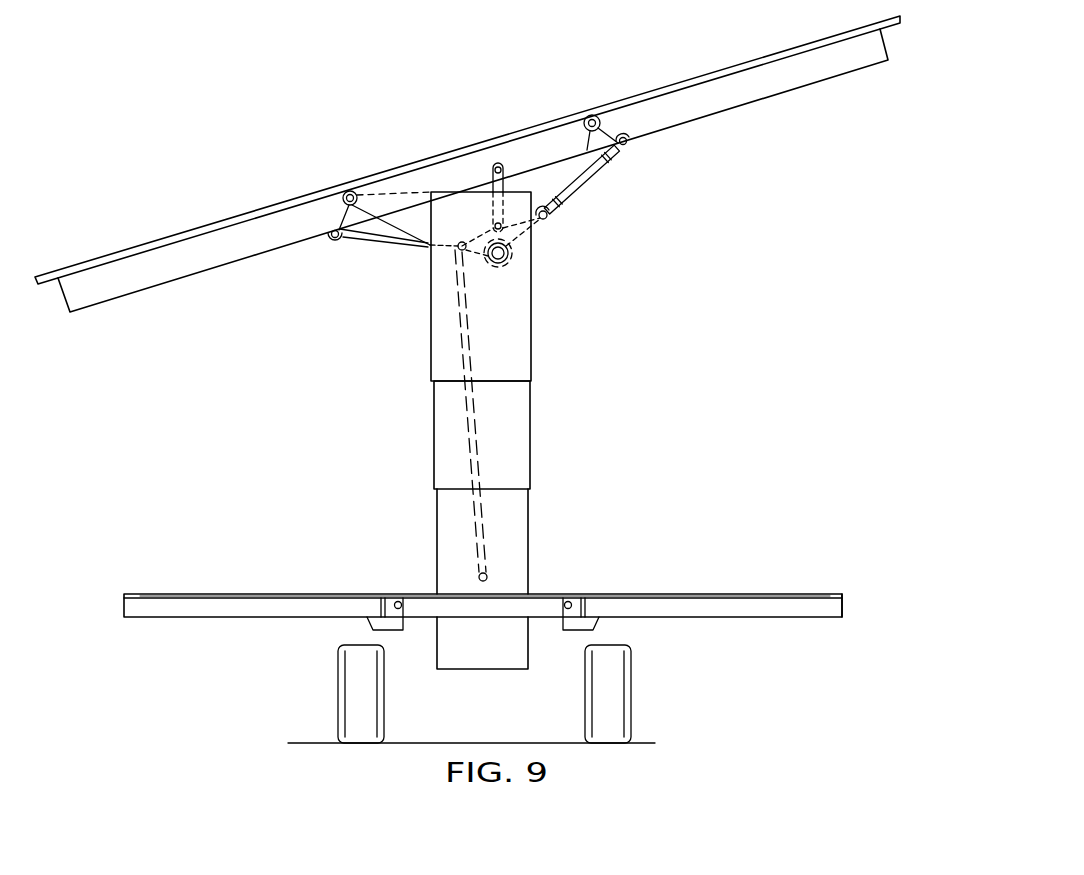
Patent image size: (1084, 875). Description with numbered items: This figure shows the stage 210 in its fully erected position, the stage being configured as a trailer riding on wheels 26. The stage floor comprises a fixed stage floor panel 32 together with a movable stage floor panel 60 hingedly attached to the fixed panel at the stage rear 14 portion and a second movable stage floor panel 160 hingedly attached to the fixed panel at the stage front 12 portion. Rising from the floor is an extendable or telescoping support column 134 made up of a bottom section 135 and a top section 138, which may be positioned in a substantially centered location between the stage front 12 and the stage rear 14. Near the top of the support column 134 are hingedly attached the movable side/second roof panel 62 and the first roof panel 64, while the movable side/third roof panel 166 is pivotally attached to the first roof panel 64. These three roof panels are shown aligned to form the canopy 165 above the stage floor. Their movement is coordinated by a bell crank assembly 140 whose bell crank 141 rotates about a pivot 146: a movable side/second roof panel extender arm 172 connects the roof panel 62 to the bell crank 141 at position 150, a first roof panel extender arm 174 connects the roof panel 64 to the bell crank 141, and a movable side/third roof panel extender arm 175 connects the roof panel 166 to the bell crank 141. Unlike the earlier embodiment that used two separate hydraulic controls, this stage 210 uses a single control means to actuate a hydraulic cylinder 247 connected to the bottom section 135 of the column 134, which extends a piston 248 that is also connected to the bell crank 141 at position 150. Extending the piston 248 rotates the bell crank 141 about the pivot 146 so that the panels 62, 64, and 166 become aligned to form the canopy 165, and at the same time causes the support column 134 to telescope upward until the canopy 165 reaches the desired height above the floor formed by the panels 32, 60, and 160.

The stage front 12 is at (843, 603).
The stage rear 14 is at (125, 610).
The wheels 26 is at (363, 703).
The fixed stage floor panel 32 is at (417, 593).
The movable stage floor panel 60 is at (187, 594).
The movable side/second roof panel 62 is at (190, 236).
The first roof panel 64 is at (488, 146).
The support columns 134 is at (552, 438).
The bottom section 135 is at (523, 537).
The top section 138 is at (533, 348).
The bell crank assembly 140 is at (574, 258).
The bell crank 141 is at (537, 232).
The pivot 146 is at (505, 260).
The position 150 is at (462, 256).
The second movable stage floor panel 160 is at (822, 593).
The canopy 165 is at (322, 141).
The movable side/third roof panel 166 is at (786, 50).
The movable side/second roof panel extender arm 172 is at (392, 245).
The first roof panel extender arm 174 is at (503, 192).
The movable side/third roof panel extender arm 175 is at (584, 178).
The stage 210 is at (245, 172).
The hydraulic cylinder 247 is at (478, 528).
The piston 248 is at (467, 356).